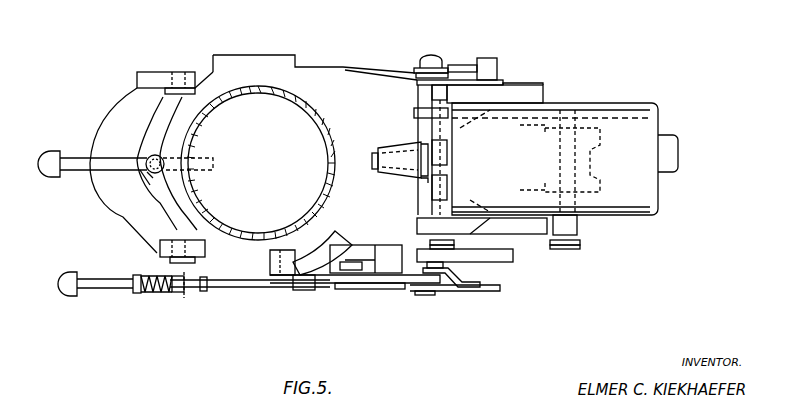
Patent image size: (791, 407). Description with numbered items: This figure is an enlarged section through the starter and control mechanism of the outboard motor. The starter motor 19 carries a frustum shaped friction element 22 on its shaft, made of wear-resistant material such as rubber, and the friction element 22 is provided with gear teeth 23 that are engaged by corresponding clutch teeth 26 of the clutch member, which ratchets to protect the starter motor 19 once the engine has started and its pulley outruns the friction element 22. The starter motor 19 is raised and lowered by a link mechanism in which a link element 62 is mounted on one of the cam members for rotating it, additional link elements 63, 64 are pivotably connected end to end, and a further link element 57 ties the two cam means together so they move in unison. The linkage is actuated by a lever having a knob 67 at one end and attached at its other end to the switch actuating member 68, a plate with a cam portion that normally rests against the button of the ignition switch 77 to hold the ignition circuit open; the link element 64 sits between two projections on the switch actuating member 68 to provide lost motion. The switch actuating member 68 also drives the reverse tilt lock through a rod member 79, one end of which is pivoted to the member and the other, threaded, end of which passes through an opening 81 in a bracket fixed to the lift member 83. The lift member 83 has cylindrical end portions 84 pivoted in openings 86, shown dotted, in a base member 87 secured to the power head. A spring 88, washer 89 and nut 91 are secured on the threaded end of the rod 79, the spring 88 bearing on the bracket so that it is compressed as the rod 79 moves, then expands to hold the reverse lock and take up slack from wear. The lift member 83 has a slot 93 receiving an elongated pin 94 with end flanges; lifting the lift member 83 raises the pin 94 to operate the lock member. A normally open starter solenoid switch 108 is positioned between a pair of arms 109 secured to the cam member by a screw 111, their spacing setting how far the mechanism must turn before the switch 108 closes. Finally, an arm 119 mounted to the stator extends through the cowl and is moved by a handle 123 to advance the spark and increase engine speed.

The starter motor 19 is at (607, 108).
The friction element 22 is at (400, 147).
The gear teeth 23 is at (421, 179).
The clutch teeth 26 is at (425, 146).
The link element 57 is at (558, 248).
The link element 62 is at (480, 280).
The link element 63 is at (470, 288).
The link element 64 is at (402, 285).
The knob 67 is at (70, 290).
The switch actuating member 68 is at (334, 285).
The ignition switch 77 is at (303, 290).
The rod member 79 is at (249, 284).
The opening 81 is at (186, 285).
The lift member 83 is at (156, 186).
The cylindrical end portions 84 is at (170, 80).
The openings 86 is at (186, 80).
The base member 87 is at (101, 195).
The spring 88 is at (167, 291).
The washer 89 is at (140, 292).
The nut 91 is at (134, 287).
The slot 93 is at (147, 160).
The pin 94 is at (142, 175).
The starter solenoid switch 108 is at (490, 60).
The arms 109 is at (463, 66).
The screw 111 is at (437, 60).
The arm 119 is at (77, 162).
The handle 123 is at (51, 172).